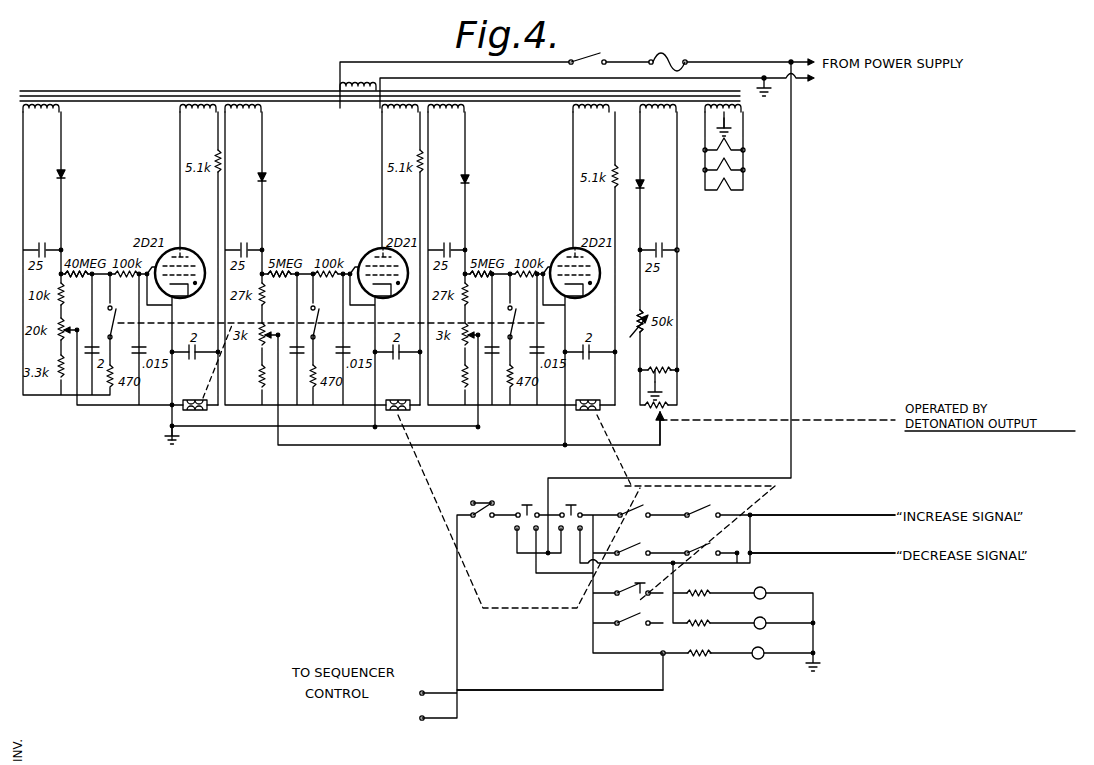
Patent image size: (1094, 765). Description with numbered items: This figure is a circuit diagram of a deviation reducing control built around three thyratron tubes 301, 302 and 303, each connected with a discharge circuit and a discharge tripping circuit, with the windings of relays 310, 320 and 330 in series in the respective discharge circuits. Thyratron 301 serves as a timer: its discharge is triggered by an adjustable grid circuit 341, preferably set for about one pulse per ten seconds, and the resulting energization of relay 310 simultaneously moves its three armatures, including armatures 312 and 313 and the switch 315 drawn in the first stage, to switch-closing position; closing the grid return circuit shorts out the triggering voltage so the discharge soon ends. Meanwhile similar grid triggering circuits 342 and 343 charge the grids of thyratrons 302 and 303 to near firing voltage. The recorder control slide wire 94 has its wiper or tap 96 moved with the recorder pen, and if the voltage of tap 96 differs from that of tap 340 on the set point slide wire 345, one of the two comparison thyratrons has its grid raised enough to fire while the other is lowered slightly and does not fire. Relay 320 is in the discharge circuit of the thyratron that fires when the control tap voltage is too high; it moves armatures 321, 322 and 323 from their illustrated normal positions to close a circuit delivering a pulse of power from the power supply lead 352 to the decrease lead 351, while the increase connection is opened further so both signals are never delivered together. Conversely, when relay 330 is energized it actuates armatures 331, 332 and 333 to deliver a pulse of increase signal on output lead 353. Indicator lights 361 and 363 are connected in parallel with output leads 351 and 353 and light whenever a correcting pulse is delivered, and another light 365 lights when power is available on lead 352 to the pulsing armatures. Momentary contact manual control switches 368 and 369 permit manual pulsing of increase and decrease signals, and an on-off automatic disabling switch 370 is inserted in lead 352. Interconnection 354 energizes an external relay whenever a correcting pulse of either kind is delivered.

The adjustable grid circuit 341 is at (78, 250).
The thyratron tube 301 is at (186, 247).
The grid triggering circuit 342 is at (272, 268).
The thyratron tube 302 is at (362, 250).
The grid triggering circuit 343 is at (472, 268).
The thyratron tube 303 is at (560, 252).
The switch 315 is at (113, 314).
The armature 312 is at (318, 322).
The armature 313 is at (526, 328).
The relay 310 is at (196, 400).
The relay 320 is at (396, 400).
The relay 330 is at (584, 400).
The set point slide wire 345 is at (646, 368).
The tap 340 is at (678, 370).
The control slide wire 94 is at (678, 407).
The wiper or tap 96 is at (660, 432).
The automatic disabling switch 370 is at (474, 501).
The manual control switch 368 is at (516, 501).
The manual control switch 369 is at (572, 501).
The armature 331 is at (628, 502).
The armature 321 is at (692, 513).
The armature 322 is at (624, 541).
The armature 332 is at (705, 541).
The armature 323 is at (632, 600).
The armature 333 is at (632, 630).
The increase output lead 353 is at (830, 515).
The decrease lead 351 is at (830, 555).
The indicator light 363 is at (766, 590).
The indicator light 361 is at (766, 620).
The light 365 is at (760, 660).
The power supply lead 352 is at (457, 606).
The interconnection 354 is at (512, 695).